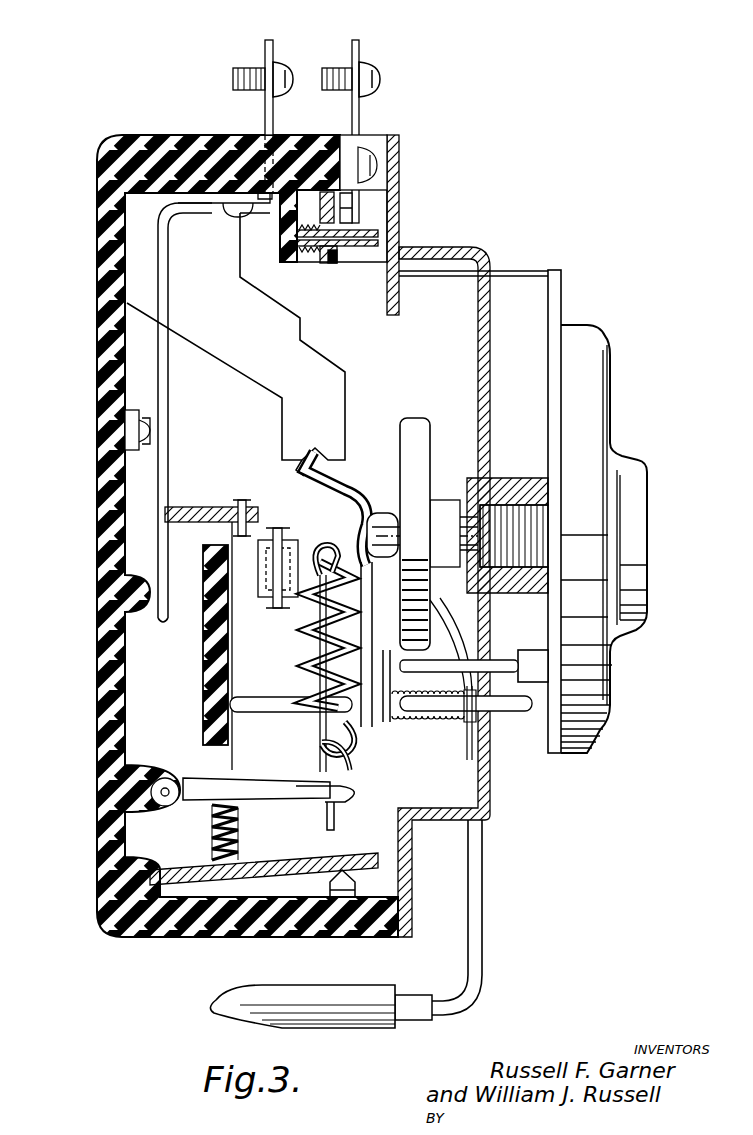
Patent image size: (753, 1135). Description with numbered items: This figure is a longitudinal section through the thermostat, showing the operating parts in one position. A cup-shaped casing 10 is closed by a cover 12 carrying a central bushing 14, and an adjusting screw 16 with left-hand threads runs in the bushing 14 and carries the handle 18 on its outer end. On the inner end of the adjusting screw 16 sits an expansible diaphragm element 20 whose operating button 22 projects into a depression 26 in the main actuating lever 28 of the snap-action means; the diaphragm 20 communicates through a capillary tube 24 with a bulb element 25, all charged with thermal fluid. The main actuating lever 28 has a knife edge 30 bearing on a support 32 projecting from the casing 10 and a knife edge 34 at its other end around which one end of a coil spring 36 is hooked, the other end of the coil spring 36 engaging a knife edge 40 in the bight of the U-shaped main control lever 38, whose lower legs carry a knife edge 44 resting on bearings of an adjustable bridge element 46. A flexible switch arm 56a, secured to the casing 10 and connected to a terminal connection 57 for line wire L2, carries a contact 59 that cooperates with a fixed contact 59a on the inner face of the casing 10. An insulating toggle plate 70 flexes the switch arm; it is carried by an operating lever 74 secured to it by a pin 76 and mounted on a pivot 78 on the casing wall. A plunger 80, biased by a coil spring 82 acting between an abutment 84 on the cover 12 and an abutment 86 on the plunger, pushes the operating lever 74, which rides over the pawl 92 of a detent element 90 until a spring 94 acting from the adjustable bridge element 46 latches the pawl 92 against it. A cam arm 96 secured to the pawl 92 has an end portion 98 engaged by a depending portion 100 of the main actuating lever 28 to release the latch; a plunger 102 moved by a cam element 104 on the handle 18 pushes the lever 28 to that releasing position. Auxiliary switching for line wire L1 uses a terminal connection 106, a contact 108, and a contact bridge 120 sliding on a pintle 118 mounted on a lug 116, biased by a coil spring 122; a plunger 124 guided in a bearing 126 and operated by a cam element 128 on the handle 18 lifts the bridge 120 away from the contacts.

The casing 10 is at (100, 178).
The cover 12 is at (485, 252).
The bushing 14 is at (498, 478).
The adjusting screw 16 is at (510, 507).
The handle 18 is at (606, 372).
The diaphragm element 20 is at (410, 425).
The operating button 22 is at (388, 515).
The capillary tube 24 is at (484, 868).
The bulb element 25 is at (298, 996).
The depression 26 is at (362, 520).
The main actuating lever 28 is at (372, 606).
The knife edge 30 is at (306, 463).
The support 32 is at (320, 378).
The knife edge 34 is at (318, 736).
The coil spring 36 is at (304, 640).
The main control lever 38 is at (318, 760).
The knife edge 40 is at (336, 571).
The knife edge 44 is at (278, 800).
The adjustable bridge element 46 is at (356, 884).
The flexible switch arm 56a is at (166, 460).
The terminal connection 57 is at (265, 104).
The contact 59 is at (152, 428).
The fixed contact 59a is at (126, 437).
The toggle plate 70 is at (216, 508).
The operating lever 74 is at (204, 660).
The pin 76 is at (240, 500).
The pivot 78 is at (298, 544).
The plunger 80 is at (438, 722).
The coil spring 82 is at (410, 720).
The abutment 84 is at (386, 722).
The abutment 86 is at (468, 724).
The detent element 90 is at (185, 780).
The pawl 92 is at (212, 812).
The spring 94 is at (212, 840).
The cam arm 96 is at (268, 812).
The end portion 98 is at (345, 806).
The depending portion 100 is at (340, 768).
The plunger 102 is at (502, 660).
The cam element 104 is at (525, 705).
The terminal connection 106 is at (358, 118).
The contact 108 is at (350, 214).
The lug 116 is at (285, 262).
The pintle 118 is at (370, 247).
The contact bridge 120 is at (334, 140).
The coil spring 122 is at (313, 256).
The plunger 124 is at (522, 280).
The bearing 126 is at (398, 312).
The cam element 128 is at (562, 282).
The line wire L1 is at (352, 116).
The line wire L2 is at (257, 101).